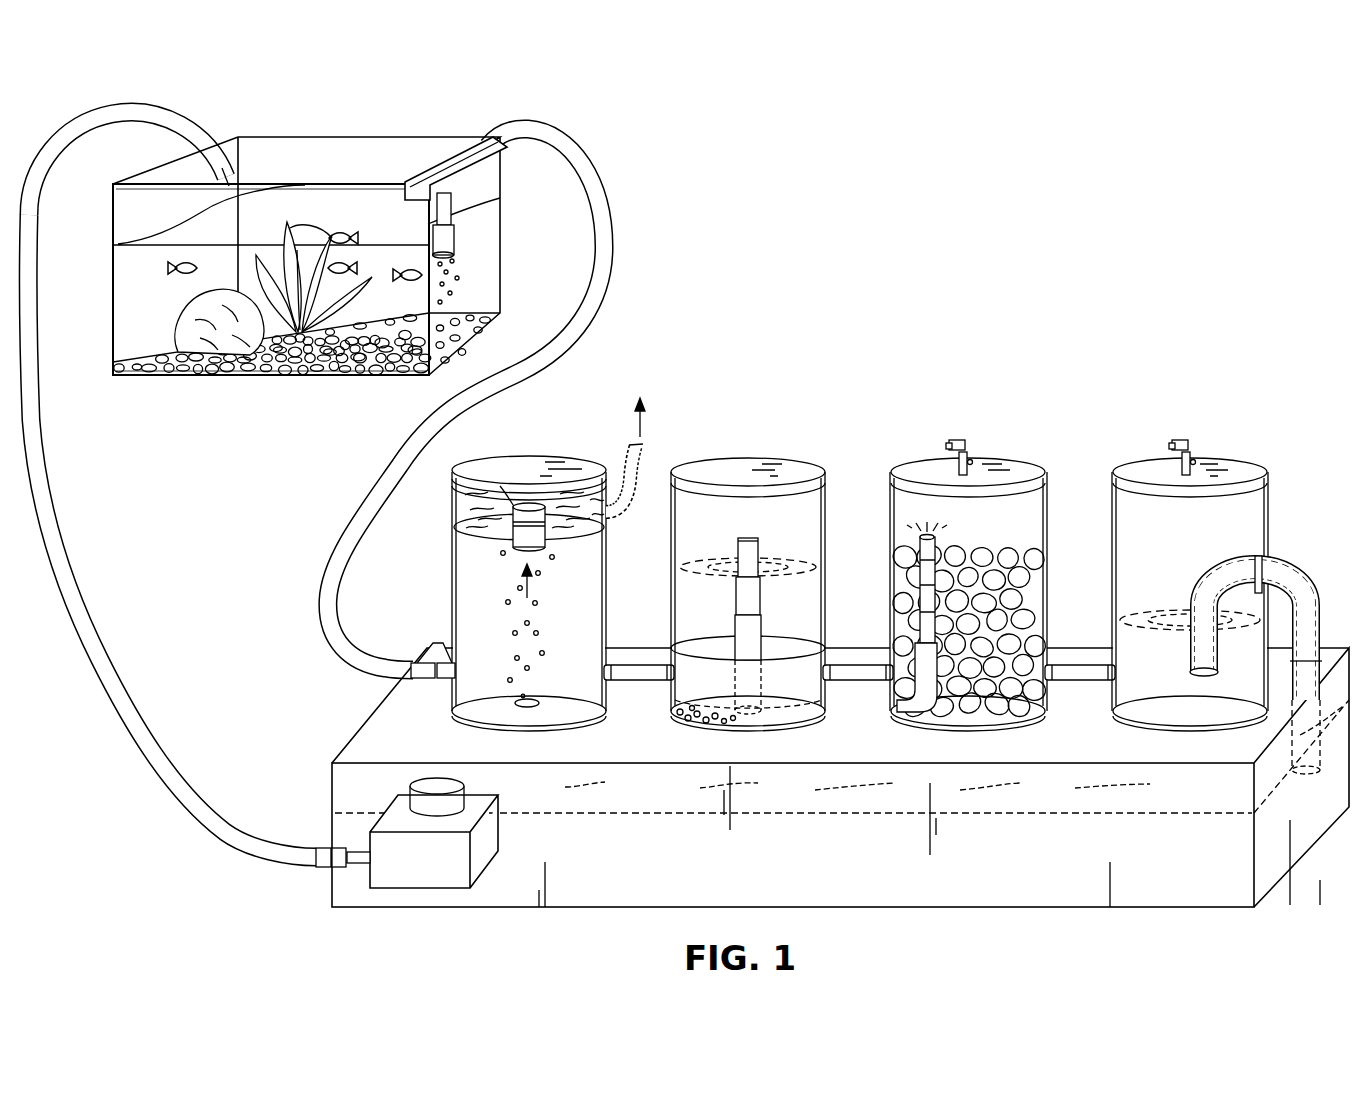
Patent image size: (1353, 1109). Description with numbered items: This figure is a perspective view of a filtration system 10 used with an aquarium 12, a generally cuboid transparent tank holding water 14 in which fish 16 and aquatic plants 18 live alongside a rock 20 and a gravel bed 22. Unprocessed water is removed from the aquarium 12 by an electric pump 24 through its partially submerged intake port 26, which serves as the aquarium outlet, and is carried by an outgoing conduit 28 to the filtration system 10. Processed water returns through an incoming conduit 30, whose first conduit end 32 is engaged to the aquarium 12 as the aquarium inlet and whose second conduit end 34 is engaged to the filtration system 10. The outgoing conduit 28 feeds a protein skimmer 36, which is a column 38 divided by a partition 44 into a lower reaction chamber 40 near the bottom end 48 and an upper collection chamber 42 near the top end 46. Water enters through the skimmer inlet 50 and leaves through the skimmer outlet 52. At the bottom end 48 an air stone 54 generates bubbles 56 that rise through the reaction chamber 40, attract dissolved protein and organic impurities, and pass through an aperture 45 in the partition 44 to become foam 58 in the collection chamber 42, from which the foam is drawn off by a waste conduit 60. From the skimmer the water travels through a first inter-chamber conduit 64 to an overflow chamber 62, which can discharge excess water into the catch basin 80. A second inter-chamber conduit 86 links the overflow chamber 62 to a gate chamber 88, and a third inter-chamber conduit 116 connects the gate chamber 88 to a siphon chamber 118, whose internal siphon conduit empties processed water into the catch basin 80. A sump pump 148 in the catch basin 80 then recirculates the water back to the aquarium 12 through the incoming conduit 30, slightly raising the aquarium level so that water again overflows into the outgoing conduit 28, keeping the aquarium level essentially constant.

The filtration system 10 is at (813, 614).
The aquarium 12 is at (317, 257).
The water 14 is at (133, 311).
The fish 16 is at (350, 233).
The aquatic plants 18 is at (313, 223).
The rock 20 is at (200, 342).
The gravel bed 22 is at (292, 350).
The electric pump 24 is at (428, 160).
The intake port 26 is at (444, 261).
The outgoing conduit 28 is at (588, 179).
The incoming conduit 30 is at (100, 678).
The first conduit end 32 is at (216, 128).
The second conduit end 34 is at (316, 832).
The protein skimmer 36 is at (480, 556).
The column 38 is at (452, 543).
The reaction chamber 40 is at (476, 630).
The collection chamber 42 is at (482, 500).
The partition 44 is at (468, 528).
The aperture 45 is at (515, 508).
The top end 46 is at (482, 455).
The bottom end 48 is at (462, 726).
The skimmer inlet 50 is at (444, 660).
The skimmer outlet 52 is at (614, 687).
The air stone 54 is at (540, 707).
The bubbles 56 is at (497, 580).
The foam 58 is at (583, 515).
The waste conduit 60 is at (626, 460).
The overflow chamber 62 is at (785, 426).
The first inter-chamber conduit 64 is at (620, 663).
The catch basin 80 is at (1190, 804).
The second inter-chamber conduit 86 is at (858, 663).
The gate chamber 88 is at (998, 428).
The third inter-chamber conduit 116 is at (1070, 663).
The siphon chamber 118 is at (1218, 443).
The sump pump 148 is at (427, 875).